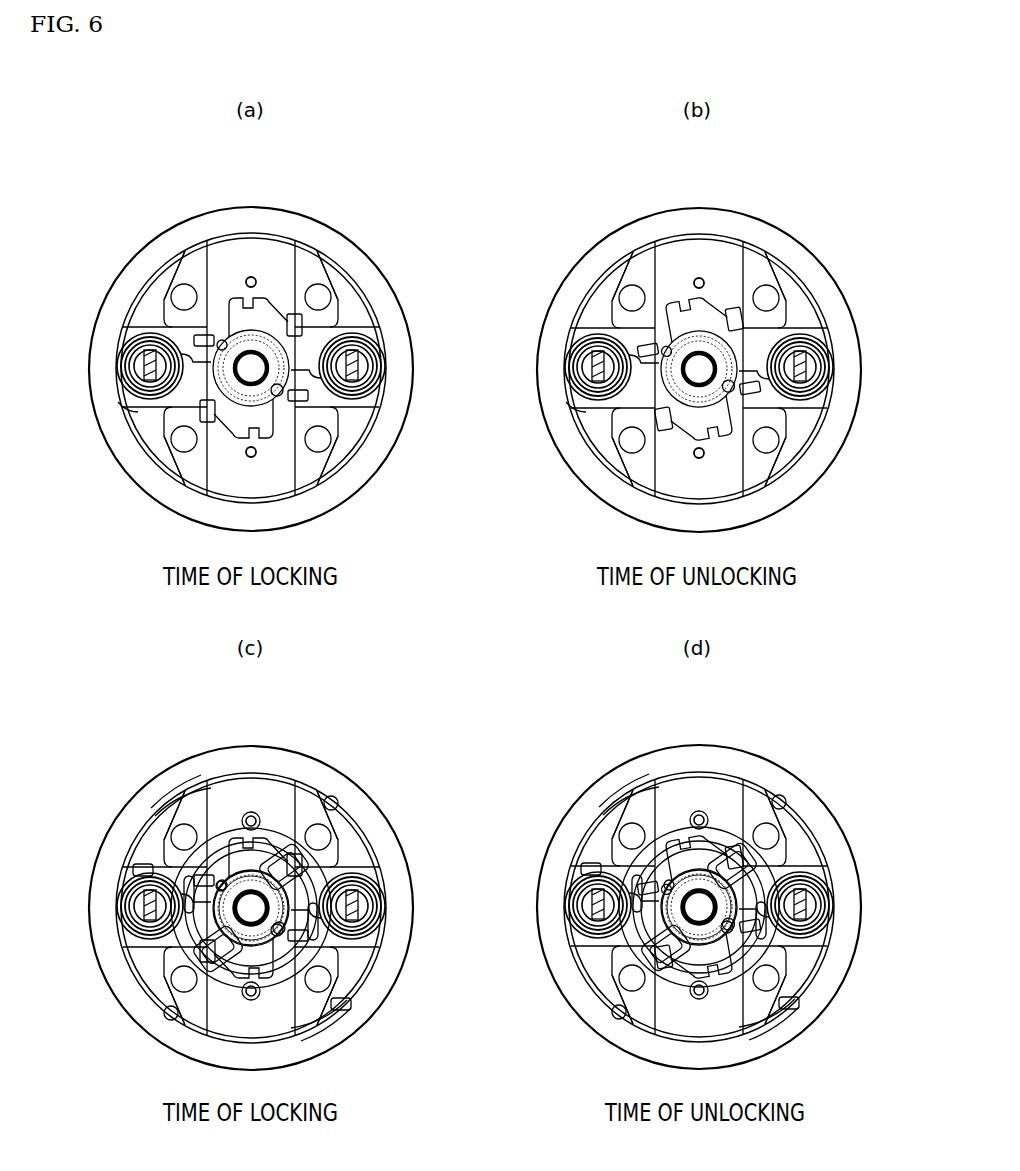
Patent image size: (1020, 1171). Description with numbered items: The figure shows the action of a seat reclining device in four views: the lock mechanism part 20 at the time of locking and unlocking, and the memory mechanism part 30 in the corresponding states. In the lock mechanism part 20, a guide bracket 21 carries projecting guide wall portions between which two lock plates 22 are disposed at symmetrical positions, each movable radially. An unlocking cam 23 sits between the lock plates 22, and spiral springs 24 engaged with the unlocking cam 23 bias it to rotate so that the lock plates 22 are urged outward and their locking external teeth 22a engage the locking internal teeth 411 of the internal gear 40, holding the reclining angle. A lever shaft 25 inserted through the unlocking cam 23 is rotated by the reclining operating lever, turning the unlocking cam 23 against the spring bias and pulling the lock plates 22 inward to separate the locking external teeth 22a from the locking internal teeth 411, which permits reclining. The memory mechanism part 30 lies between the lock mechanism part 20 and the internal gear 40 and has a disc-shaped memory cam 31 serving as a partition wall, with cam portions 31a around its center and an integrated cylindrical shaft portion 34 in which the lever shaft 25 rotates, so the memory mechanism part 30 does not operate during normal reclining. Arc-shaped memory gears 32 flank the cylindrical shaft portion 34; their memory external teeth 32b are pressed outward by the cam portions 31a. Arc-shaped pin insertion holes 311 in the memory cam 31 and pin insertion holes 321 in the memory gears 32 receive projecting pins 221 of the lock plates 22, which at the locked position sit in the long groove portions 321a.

The lock mechanism part 20 is at (120, 328).
The guide bracket 21 is at (288, 350).
The lock plate 22 is at (300, 252).
The locking external teeth 22a is at (280, 235).
The projecting pin 221 is at (246, 280).
The unlocking cam 23 is at (130, 408).
The spiral spring 24 is at (384, 367).
The lever shaft 25 is at (300, 330).
The memory mechanism part 30 is at (130, 912).
The memory cam 31 is at (330, 852).
The cam portion 31a is at (330, 895).
The pin insertion hole 311 is at (320, 880).
The memory gear 32 is at (140, 835).
The memory external teeth 32b is at (180, 790).
The pin insertion hole 321 is at (140, 870).
The long groove portion 321a is at (345, 800).
The cylindrical shaft portion 34 is at (200, 960).
The internal gear 40 is at (392, 272).
The locking internal teeth 411 is at (180, 252).